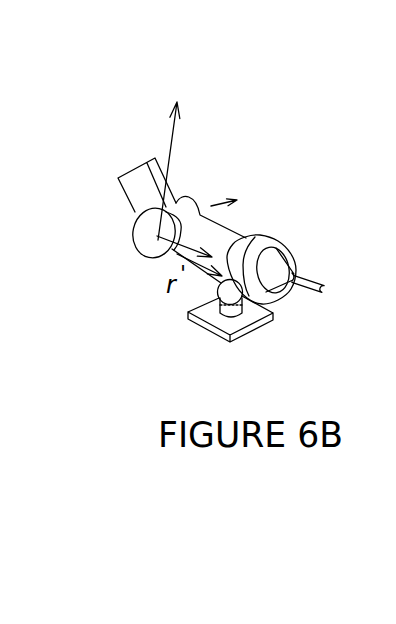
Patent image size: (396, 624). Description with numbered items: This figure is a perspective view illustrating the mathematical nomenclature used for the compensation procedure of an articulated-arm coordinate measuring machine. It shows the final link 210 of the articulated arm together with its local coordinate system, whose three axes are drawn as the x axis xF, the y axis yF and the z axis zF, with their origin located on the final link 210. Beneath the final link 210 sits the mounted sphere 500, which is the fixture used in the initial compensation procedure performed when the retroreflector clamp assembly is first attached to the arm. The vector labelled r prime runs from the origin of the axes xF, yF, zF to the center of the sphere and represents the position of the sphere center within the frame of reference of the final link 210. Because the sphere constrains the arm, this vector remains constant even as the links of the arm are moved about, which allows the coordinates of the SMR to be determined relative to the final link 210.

The final link 210 is at (248, 238).
The mounted sphere 500 is at (182, 342).
The x axis of final link coordinate system xF is at (239, 190).
The y axis of final link coordinate system yF is at (176, 151).
The z axis of final link coordinate system zF is at (172, 250).